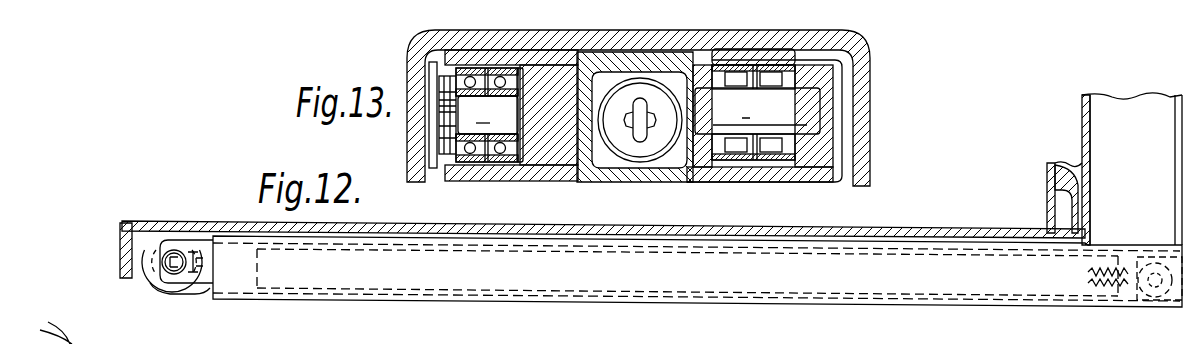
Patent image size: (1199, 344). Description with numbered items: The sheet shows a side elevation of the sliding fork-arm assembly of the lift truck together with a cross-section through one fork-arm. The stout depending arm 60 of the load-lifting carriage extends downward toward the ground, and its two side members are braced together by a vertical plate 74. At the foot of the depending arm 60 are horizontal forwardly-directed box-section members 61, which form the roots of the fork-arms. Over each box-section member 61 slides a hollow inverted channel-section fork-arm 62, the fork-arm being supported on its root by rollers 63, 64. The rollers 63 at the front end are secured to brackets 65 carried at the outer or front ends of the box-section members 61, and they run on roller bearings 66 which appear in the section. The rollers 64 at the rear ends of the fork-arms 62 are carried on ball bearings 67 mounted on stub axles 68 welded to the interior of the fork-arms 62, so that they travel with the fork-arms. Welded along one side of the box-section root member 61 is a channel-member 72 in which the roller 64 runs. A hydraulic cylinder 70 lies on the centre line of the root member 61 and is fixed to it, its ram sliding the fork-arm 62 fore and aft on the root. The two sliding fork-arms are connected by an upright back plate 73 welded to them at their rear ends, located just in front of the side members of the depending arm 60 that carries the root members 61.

In FIG. 12, the depending arm 60 is at (1103, 132).
In FIG. 13, the box-section member 61 is at (638, 170).
In FIG. 12, the box-section member 61 is at (860, 263).
In FIG. 13, the fork-arm 62 is at (871, 60).
In FIG. 12, the fork-arm 62 is at (363, 226).
In FIG. 13, the roller 63 is at (733, 60).
In FIG. 12, the roller 63 is at (175, 236).
In FIG. 13, the roller 64 is at (473, 158).
In FIG. 13, the bracket 65 is at (703, 160).
In FIG. 13, the roller bearing 66 is at (777, 65).
In FIG. 13, the ball bearing 67 is at (465, 75).
In FIG. 13, the stub axle 68 is at (468, 115).
In FIG. 13, the cylinder 70 is at (622, 155).
In FIG. 13, the channel-member 72 is at (545, 163).
In FIG. 12, the back plate 73 is at (1045, 197).
In FIG. 12, the vertical plate 74 is at (1082, 148).